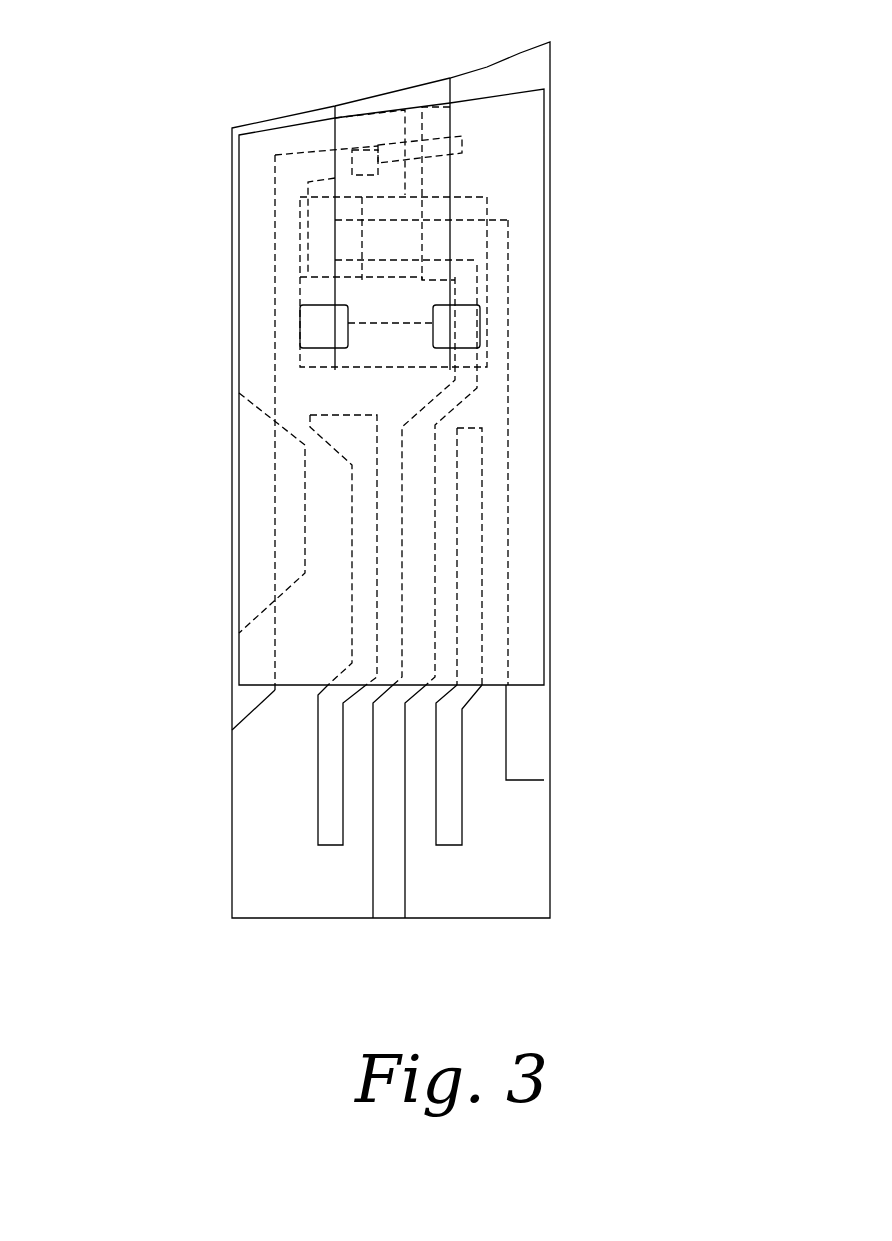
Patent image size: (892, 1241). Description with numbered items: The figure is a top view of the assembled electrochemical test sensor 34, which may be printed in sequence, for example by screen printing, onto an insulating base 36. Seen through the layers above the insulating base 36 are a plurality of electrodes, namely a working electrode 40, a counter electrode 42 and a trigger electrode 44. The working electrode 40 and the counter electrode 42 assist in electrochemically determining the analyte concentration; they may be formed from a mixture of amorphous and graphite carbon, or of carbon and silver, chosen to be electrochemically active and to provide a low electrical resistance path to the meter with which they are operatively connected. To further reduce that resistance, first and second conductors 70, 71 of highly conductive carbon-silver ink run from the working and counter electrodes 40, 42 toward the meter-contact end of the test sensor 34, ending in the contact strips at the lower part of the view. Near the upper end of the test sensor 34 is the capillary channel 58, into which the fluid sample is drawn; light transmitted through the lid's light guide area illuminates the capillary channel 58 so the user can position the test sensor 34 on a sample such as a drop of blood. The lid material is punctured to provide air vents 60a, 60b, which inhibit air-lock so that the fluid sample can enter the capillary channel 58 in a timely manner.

The electrochemical test sensor 34 is at (117, 480).
The insulating base 36 is at (569, 877).
The working electrode 40 is at (408, 240).
The counter electrode 42 is at (400, 297).
The trigger electrode 44 is at (412, 147).
The capillary channel 58 is at (387, 92).
The air vent 60a is at (470, 317).
The air vent 60b is at (307, 316).
The first conductor 70 is at (453, 755).
The second conductor 71 is at (327, 753).